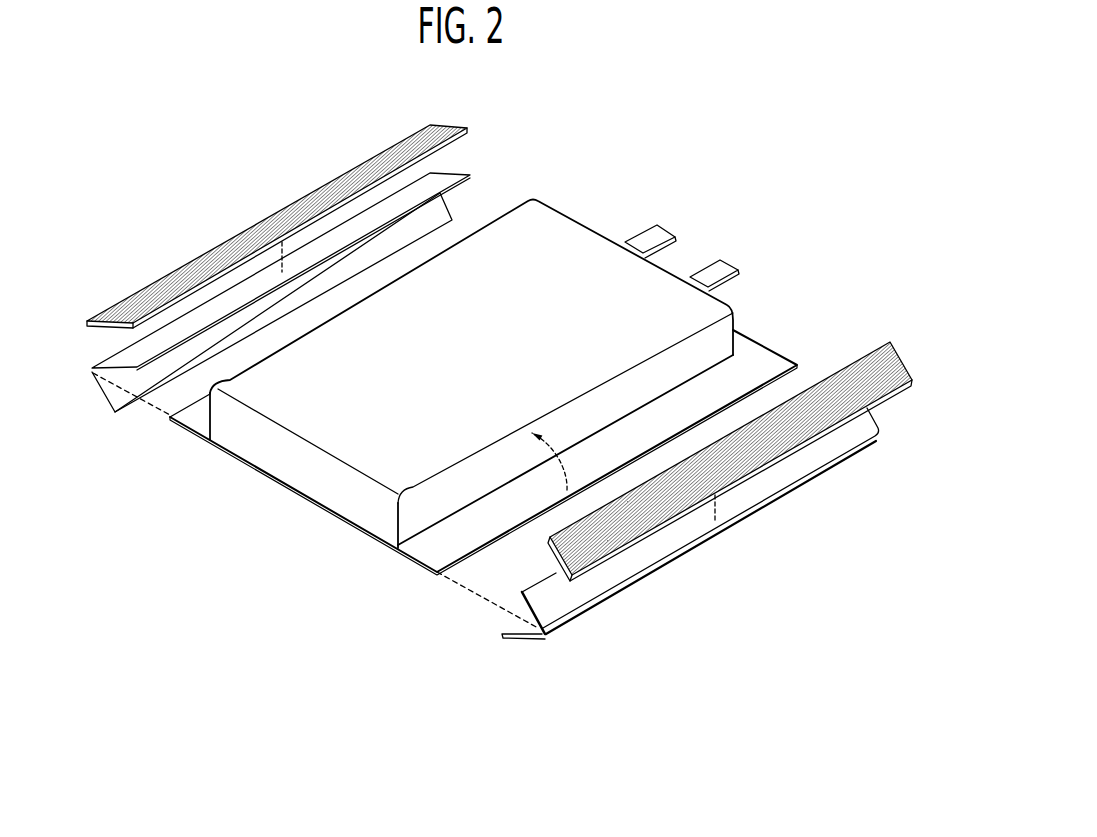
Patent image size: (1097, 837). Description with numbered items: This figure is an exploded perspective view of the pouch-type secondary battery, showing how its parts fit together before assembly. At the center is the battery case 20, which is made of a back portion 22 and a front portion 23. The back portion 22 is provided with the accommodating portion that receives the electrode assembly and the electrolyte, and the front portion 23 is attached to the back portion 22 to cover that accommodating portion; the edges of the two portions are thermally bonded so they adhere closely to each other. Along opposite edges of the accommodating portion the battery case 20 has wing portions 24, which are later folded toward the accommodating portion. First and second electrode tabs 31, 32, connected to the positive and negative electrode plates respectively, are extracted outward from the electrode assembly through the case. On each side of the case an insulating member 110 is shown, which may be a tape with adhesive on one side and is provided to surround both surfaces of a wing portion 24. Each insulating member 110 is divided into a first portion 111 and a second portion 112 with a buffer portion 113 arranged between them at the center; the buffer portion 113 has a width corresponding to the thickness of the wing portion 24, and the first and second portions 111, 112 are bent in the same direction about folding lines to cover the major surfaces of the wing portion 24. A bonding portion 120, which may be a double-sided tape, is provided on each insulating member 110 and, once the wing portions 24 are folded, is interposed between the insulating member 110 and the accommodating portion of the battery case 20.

The battery case 20 is at (242, 548).
The back portion 22 is at (337, 435).
The front portion 23 is at (325, 510).
The wing portions 24 is at (462, 533).
The first electrode tab 31 is at (727, 265).
The second electrode tab 32 is at (663, 232).
The insulating member 110 is at (123, 413).
The first portion 111 is at (532, 598).
The second portion 112 is at (525, 640).
The buffer portion 113 is at (550, 642).
The bonding portion 120 is at (438, 126).